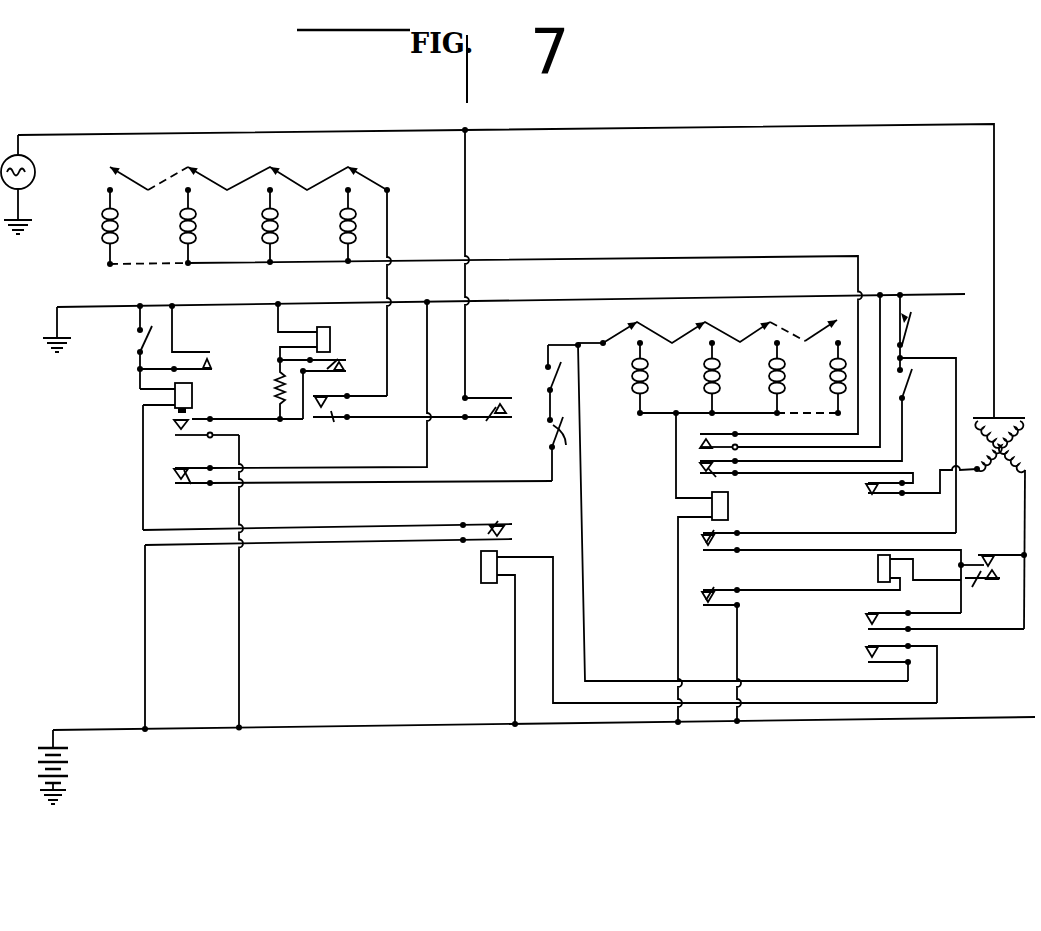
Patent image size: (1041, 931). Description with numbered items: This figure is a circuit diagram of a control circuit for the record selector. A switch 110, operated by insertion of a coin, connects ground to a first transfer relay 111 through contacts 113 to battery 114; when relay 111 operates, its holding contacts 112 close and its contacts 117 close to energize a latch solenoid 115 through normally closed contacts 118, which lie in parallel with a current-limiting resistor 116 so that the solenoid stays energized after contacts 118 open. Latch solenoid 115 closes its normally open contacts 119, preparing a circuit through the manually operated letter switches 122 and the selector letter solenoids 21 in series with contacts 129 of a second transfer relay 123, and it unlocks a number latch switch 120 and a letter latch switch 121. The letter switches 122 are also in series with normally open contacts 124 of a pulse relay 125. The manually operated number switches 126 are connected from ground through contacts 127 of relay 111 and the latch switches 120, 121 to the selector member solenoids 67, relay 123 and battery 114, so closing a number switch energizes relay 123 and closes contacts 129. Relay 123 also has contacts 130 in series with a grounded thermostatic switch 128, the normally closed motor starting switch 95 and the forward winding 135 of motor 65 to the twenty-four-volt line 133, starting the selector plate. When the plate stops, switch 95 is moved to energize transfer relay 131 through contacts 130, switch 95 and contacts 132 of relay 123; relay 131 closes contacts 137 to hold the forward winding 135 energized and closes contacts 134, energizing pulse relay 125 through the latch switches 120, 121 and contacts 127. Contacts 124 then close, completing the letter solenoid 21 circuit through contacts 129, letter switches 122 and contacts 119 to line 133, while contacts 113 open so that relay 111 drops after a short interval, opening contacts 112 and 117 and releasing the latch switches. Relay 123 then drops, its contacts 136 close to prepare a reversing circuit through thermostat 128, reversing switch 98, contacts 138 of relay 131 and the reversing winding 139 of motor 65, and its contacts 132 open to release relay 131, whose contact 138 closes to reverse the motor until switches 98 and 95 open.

The selector letter solenoids 21 is at (280, 229).
The motor 65 is at (991, 416).
The selector member solenoids 67 is at (722, 387).
The motor starting switch 95 is at (994, 583).
The reversing switch 98 is at (911, 398).
The switch 110 is at (136, 341).
The first transfer relay 111 is at (192, 390).
The contacts 112 is at (190, 351).
The contacts 113 is at (488, 528).
The battery 114 is at (78, 765).
The latch solenoid 115 is at (325, 327).
The current-limiting resistor 116 is at (279, 393).
The contacts 117 is at (193, 428).
The normally closed contacts 118 is at (341, 362).
The normally open contacts 119 is at (335, 423).
The number latch switch 120 is at (545, 370).
The letter latch switch 121 is at (567, 435).
The letter switches 122 is at (250, 168).
The second transfer relay 123 is at (730, 503).
The normally open contacts 124 is at (490, 410).
The pulse relay 125 is at (480, 586).
The number switches 126 is at (690, 331).
The contacts 127 is at (194, 478).
The thermostatic switch 128 is at (912, 326).
The contacts 129 is at (722, 441).
The normally open contacts 130 is at (745, 531).
The transfer relay 131 is at (877, 573).
The contacts 132 is at (721, 600).
The 24-volt line 133 is at (850, 121).
The normally open contacts 134 is at (866, 657).
The forward winding 135 is at (1011, 474).
The contacts 136 is at (717, 478).
The contacts 137 is at (866, 619).
The contacts 138 is at (865, 496).
The reversing winding 139 is at (986, 473).